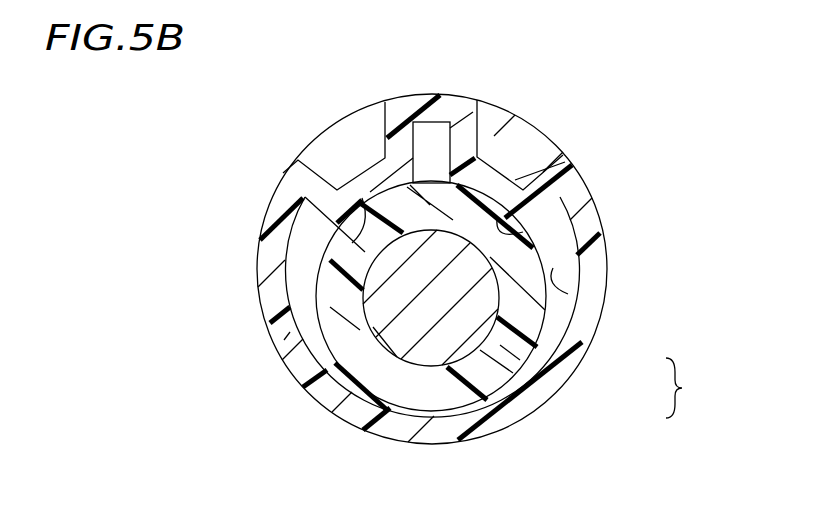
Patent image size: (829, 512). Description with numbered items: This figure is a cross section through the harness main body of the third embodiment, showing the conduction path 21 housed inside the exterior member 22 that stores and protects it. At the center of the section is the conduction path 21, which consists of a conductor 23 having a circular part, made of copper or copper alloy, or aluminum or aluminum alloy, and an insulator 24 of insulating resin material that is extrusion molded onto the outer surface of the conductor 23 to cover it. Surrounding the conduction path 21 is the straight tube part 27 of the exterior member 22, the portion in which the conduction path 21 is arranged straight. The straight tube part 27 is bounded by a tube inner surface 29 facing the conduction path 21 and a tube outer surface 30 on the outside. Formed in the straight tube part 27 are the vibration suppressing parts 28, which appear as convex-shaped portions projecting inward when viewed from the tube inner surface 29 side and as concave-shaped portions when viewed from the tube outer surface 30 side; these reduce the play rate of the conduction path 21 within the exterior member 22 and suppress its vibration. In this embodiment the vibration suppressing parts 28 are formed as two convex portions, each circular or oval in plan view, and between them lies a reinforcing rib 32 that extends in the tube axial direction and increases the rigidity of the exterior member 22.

The conduction path 21 is at (691, 388).
The exterior member 22 is at (272, 183).
The conductor 23 is at (478, 322).
The insulator 24 is at (513, 360).
The straight tube part 27 is at (284, 340).
The vibration suppressing part 28 is at (352, 243).
The tube inner surface 29 is at (568, 294).
The tube outer surface 30 is at (606, 263).
The reinforcing rib 32 is at (417, 104).